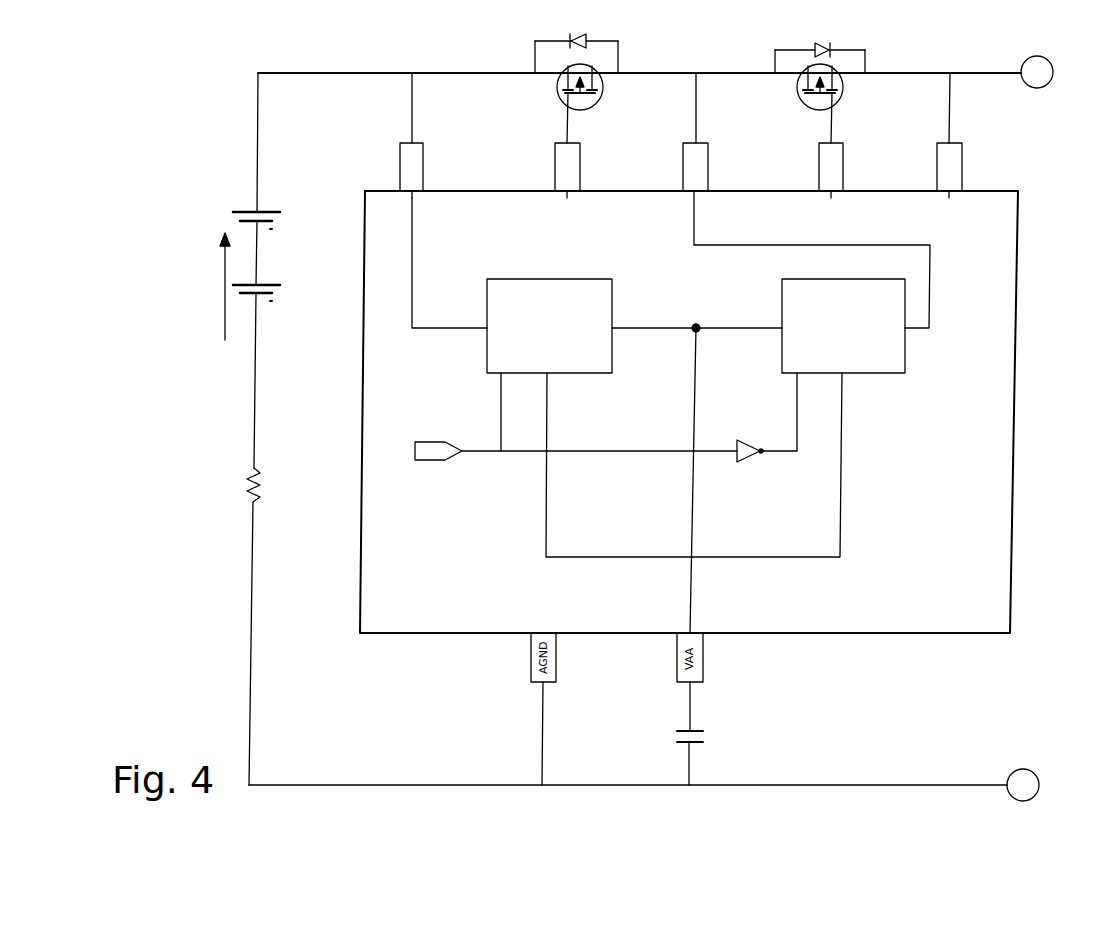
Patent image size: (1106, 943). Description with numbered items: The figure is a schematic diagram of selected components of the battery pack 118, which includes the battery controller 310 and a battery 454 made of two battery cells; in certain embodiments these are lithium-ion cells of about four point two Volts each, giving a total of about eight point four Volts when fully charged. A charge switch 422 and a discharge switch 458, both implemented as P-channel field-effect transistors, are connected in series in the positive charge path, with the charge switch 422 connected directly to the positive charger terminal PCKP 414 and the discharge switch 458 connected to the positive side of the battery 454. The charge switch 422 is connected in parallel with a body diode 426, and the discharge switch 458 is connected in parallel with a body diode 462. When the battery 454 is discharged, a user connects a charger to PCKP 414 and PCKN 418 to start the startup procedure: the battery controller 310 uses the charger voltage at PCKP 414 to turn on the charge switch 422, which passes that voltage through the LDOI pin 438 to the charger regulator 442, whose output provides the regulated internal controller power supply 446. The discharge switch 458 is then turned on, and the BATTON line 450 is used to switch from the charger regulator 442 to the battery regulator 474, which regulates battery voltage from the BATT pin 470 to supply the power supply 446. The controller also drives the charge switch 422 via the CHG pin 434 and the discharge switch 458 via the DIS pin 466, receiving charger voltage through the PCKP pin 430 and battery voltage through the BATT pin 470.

The battery pack 118 is at (160, 93).
The battery 454 is at (200, 250).
The body diode 462 is at (603, 43).
The discharge switch 458 is at (594, 106).
The body diode 426 is at (838, 47).
The charge switch 422 is at (843, 100).
The positive charger terminal (PCKP) 414 is at (1037, 90).
The PCKN 418 is at (1036, 793).
The battery controller 310 is at (915, 640).
The BATT pin 470 is at (416, 195).
The DIS pin 466 is at (569, 195).
The LDOI pin 438 is at (699, 195).
The CHG pin 434 is at (833, 195).
The PCKP pin 430 is at (951, 195).
The battery regulator (BATT LDO) 474 is at (588, 375).
The regulated internal controller power supply 446 is at (700, 316).
The charger regulator (LDOI LDO) 442 is at (872, 375).
The BATTON line 450 is at (432, 462).